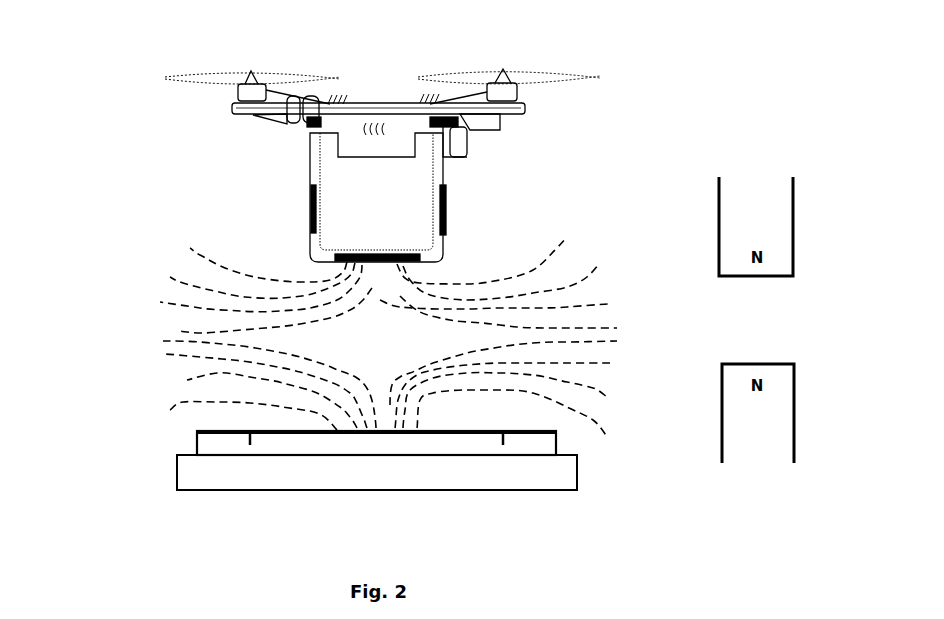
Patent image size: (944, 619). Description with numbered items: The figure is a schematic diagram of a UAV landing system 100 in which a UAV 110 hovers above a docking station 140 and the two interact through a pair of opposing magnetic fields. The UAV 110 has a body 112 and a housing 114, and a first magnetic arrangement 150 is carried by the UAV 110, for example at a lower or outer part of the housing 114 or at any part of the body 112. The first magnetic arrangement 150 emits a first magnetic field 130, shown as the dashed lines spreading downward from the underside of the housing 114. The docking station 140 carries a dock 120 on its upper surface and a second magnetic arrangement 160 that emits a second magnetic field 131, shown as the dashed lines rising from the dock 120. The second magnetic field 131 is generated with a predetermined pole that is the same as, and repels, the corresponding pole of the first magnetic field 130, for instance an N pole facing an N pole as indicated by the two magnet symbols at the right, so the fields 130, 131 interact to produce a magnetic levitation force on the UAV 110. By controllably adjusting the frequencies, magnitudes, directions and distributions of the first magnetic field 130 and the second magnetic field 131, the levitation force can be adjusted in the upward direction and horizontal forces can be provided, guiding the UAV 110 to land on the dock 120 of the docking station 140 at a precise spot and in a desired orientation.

The UAV landing system 100 is at (824, 35).
The UAV 110 is at (523, 108).
The body 112 is at (467, 147).
The housing 114 is at (443, 176).
The dock 120 is at (197, 443).
The first magnetic field 130 is at (400, 308).
The second magnetic field 131 is at (178, 356).
The docking station 140 is at (177, 477).
The first magnetic arrangement 150 is at (442, 202).
The second magnetic arrangement 160 is at (377, 431).